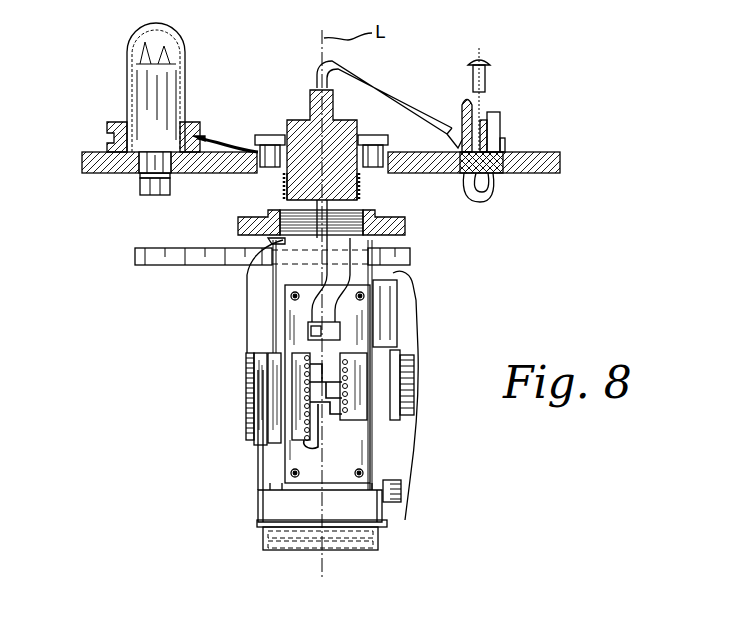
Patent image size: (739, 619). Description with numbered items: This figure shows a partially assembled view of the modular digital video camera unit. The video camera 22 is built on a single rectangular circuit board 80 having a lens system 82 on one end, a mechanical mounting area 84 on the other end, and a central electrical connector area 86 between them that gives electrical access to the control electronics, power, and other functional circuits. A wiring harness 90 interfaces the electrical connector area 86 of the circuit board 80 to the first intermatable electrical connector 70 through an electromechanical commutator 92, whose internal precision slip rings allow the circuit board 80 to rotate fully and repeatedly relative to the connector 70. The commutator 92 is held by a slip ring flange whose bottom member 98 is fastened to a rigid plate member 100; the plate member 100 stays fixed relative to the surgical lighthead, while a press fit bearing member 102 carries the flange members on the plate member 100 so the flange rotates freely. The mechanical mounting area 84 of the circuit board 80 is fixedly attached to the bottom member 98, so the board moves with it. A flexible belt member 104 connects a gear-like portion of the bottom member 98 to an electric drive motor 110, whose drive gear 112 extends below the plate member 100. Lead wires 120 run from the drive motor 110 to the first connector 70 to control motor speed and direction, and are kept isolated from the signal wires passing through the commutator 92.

The video camera 22 is at (338, 478).
The first intermatable electrical connector 70 is at (514, 122).
The circuit board 80 is at (302, 490).
The lens system 82 is at (387, 540).
The mechanical mounting area 84 is at (427, 271).
The electrical connector area 86 is at (240, 405).
The wiring harness 90 is at (243, 322).
The electromechanical commutator 92 is at (307, 127).
The bottom member 98 is at (400, 227).
The plate member 100 is at (540, 152).
The press fit bearing member 102 is at (270, 167).
The flexible belt member 104 is at (187, 267).
The electric drive motor 110 is at (124, 85).
The drive gear 112 is at (140, 186).
The lead wires 120 is at (222, 133).